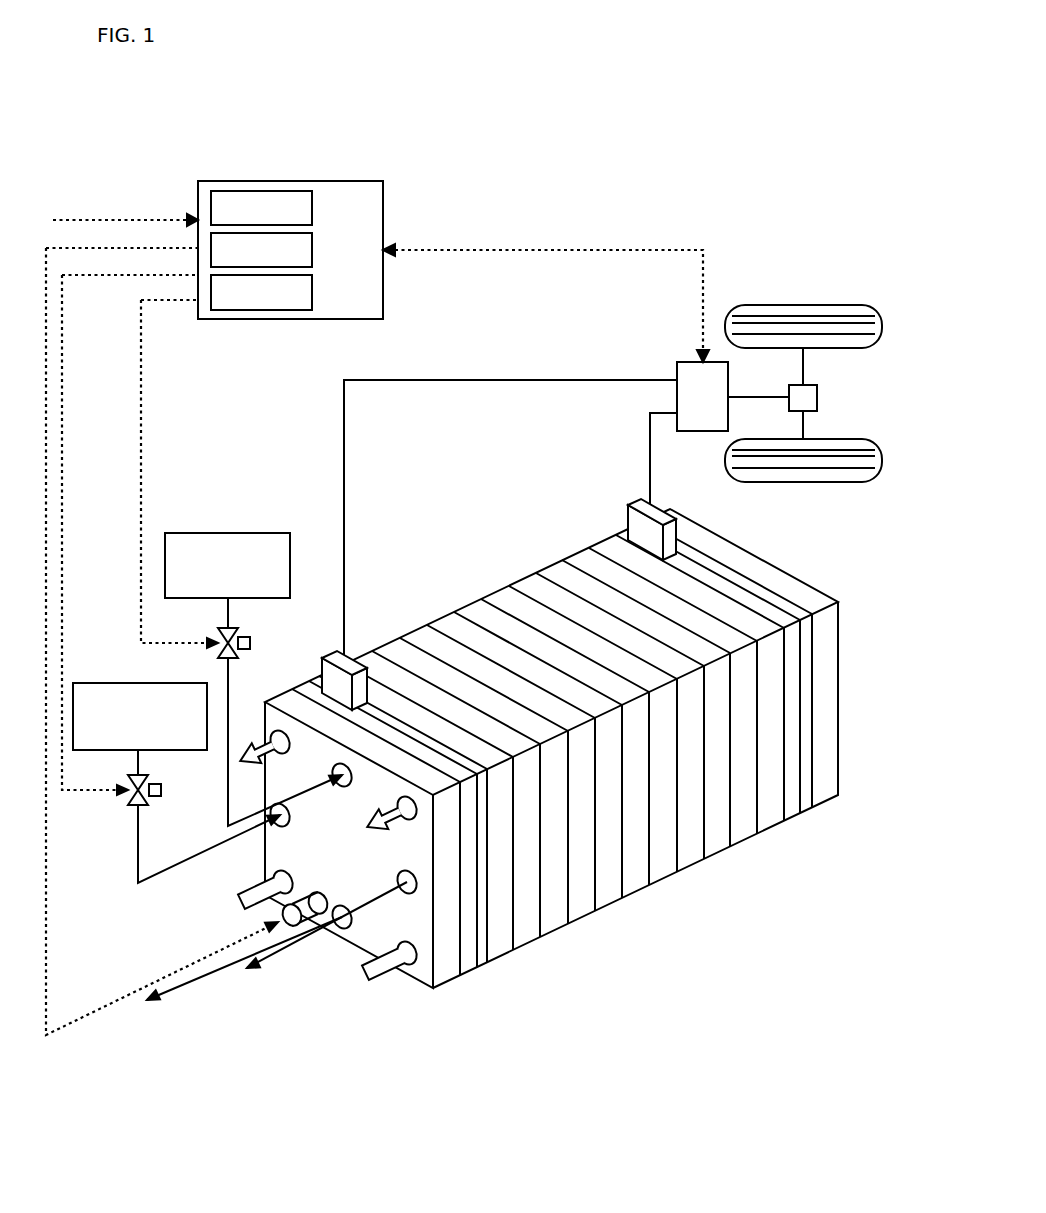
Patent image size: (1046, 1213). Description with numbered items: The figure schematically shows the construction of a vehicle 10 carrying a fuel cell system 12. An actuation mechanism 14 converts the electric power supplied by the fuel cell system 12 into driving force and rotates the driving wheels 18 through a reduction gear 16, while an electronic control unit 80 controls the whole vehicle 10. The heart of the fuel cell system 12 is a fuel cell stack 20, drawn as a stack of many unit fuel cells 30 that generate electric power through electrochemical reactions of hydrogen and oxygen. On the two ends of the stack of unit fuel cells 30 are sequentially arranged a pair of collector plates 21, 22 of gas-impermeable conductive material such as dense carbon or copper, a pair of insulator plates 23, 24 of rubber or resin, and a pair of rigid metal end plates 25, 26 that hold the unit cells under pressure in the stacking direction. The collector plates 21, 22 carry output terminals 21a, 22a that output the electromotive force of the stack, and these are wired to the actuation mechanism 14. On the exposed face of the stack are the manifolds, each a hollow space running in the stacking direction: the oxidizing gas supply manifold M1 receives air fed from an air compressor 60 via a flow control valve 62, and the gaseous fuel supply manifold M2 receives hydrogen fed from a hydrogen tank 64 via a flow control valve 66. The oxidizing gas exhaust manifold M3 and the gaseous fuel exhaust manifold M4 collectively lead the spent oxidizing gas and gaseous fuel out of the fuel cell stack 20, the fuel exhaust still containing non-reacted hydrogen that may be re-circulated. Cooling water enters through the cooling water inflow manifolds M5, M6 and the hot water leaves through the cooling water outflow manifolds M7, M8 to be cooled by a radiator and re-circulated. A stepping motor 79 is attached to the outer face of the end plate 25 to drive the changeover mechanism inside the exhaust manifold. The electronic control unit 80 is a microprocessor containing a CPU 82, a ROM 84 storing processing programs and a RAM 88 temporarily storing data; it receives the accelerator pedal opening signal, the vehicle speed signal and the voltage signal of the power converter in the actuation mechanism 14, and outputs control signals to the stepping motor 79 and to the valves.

The vehicle 10 is at (644, 189).
The fuel cell system 12 is at (811, 950).
The actuation mechanism 14 is at (703, 432).
The reduction gear 16 is at (790, 383).
The driving wheels 18 is at (855, 348).
The fuel cell stack 20 is at (580, 753).
The collector plate 21 is at (480, 951).
The output terminal 21a is at (363, 660).
The collector plate 22 is at (790, 805).
The output terminal 22a is at (630, 500).
The insulator plate 23 is at (465, 969).
The insulator plate 24 is at (808, 788).
The end plate 25 is at (445, 977).
The end plate 26 is at (830, 763).
The unit fuel cell 30 is at (687, 852).
The air compressor 60 is at (229, 533).
The flow control valve 62 is at (250, 644).
The hydrogen tank 64 is at (100, 683).
The flow control valve 66 is at (161, 791).
The stepping motor 79 is at (306, 903).
The electronic control unit 80 is at (198, 183).
The CPU 82 is at (313, 208).
The ROM 84 is at (313, 250).
The RAM 88 is at (313, 292).
The oxidizing gas supply manifold M1 is at (332, 782).
The gaseous fuel supply manifold M2 is at (276, 827).
The oxidizing gas exhaust manifold M3 is at (337, 926).
The gaseous fuel exhaust manifold M4 is at (398, 879).
The cooling water inflow manifold M5 is at (286, 877).
The cooling water inflow manifold M6 is at (403, 964).
The cooling water outflow manifold M7 is at (270, 737).
The cooling water outflow manifold M8 is at (400, 810).